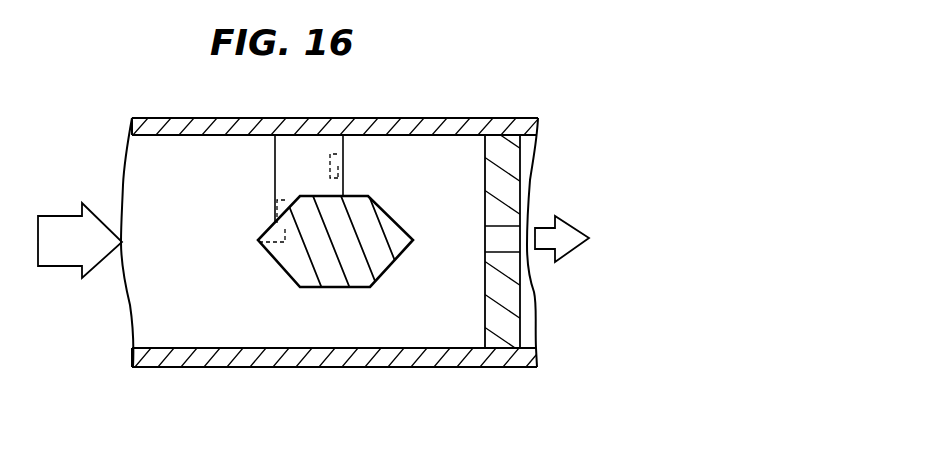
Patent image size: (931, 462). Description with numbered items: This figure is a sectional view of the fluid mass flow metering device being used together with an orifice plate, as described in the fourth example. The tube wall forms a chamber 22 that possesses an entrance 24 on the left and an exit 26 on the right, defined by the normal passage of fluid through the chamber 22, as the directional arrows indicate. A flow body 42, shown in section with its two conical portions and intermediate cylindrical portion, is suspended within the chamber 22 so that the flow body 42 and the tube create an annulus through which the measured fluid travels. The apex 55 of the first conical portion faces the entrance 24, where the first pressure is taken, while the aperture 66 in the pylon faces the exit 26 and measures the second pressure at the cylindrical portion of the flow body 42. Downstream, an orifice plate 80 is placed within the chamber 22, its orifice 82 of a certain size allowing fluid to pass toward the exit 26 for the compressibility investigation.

The chamber 22 is at (183, 333).
The entrance 24 is at (140, 300).
The exit 26 is at (468, 327).
The flow body 42 is at (309, 303).
The apex 55 is at (258, 238).
The aperture 66 is at (340, 172).
The orifice plate 80 is at (505, 162).
The orifice 82 is at (505, 238).